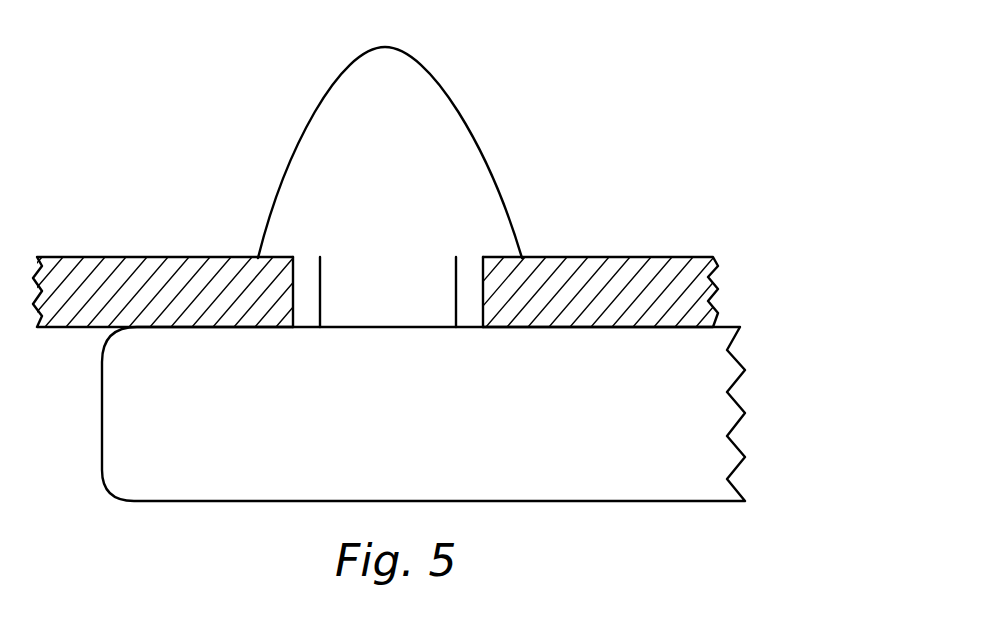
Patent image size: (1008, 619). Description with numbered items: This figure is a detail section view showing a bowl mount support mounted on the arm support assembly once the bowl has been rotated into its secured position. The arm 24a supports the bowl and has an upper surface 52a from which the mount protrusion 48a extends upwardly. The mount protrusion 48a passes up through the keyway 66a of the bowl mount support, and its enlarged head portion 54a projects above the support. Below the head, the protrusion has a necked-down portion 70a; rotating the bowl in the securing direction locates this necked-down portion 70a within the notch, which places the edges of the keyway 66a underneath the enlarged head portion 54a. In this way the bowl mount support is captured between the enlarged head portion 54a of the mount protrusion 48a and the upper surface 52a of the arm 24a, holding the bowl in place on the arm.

The arm 24a is at (698, 410).
The upper surface 52a is at (727, 323).
The necked-down portion 70a is at (327, 297).
The keyway 66a is at (473, 299).
The mount protrusion 48a is at (318, 108).
The enlarged head portion 54a is at (437, 123).